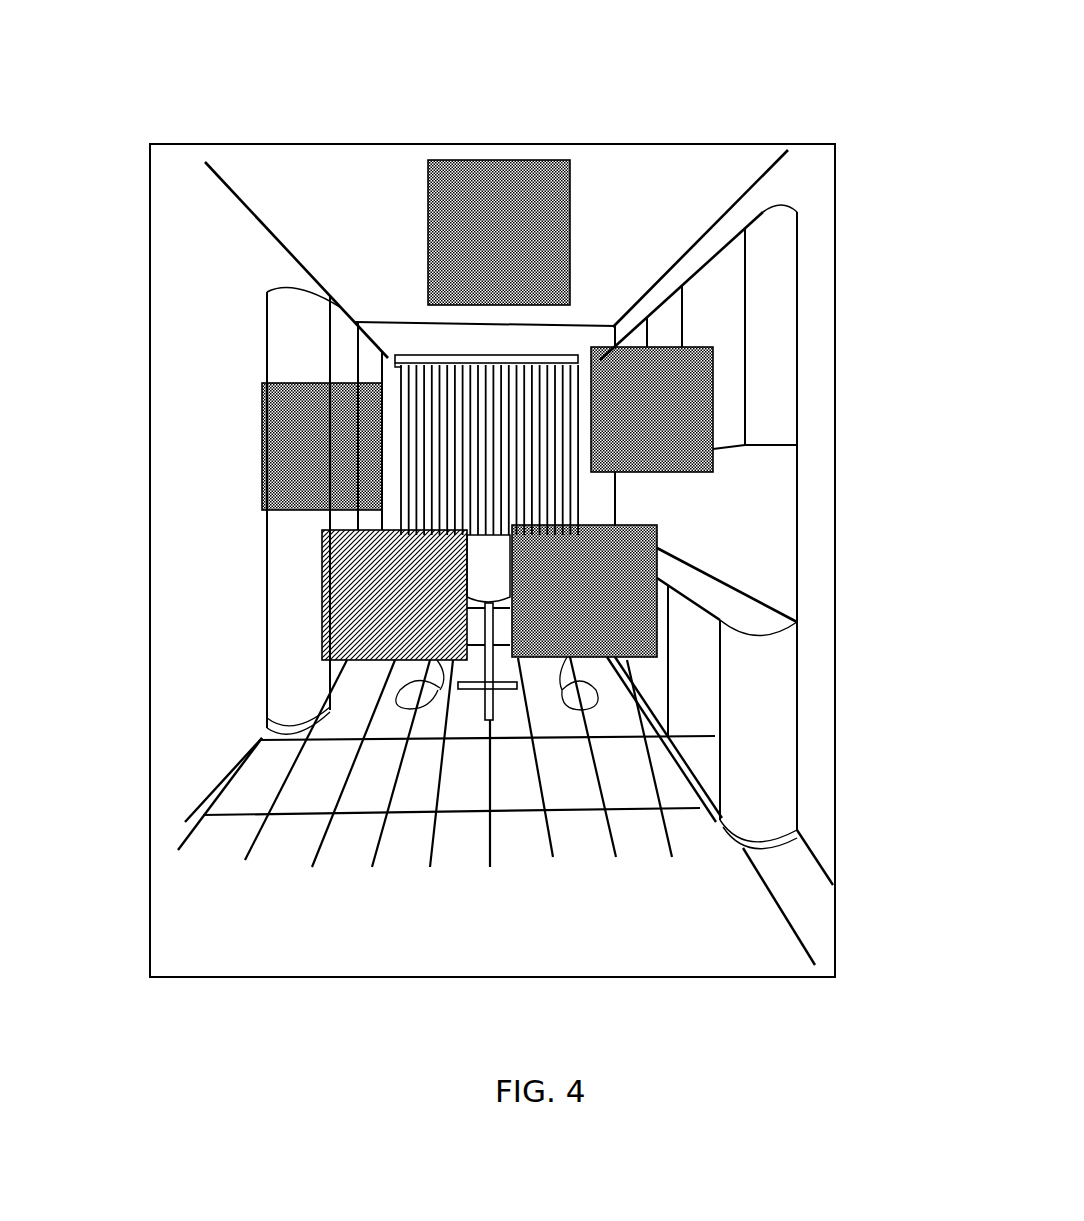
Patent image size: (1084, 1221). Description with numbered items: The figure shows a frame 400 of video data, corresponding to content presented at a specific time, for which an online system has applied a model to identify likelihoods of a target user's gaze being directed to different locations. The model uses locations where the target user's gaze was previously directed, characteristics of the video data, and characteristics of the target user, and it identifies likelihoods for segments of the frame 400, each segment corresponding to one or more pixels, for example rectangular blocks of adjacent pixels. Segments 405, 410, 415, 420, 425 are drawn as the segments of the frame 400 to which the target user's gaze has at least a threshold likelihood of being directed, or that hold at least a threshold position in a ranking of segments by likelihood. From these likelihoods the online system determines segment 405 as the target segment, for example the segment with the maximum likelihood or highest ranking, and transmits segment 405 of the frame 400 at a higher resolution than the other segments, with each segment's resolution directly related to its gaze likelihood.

The frame 400 is at (505, 145).
The segment 405 is at (322, 593).
The segment 410 is at (657, 592).
The segment 415 is at (572, 233).
The segment 420 is at (262, 448).
The segment 425 is at (713, 409).